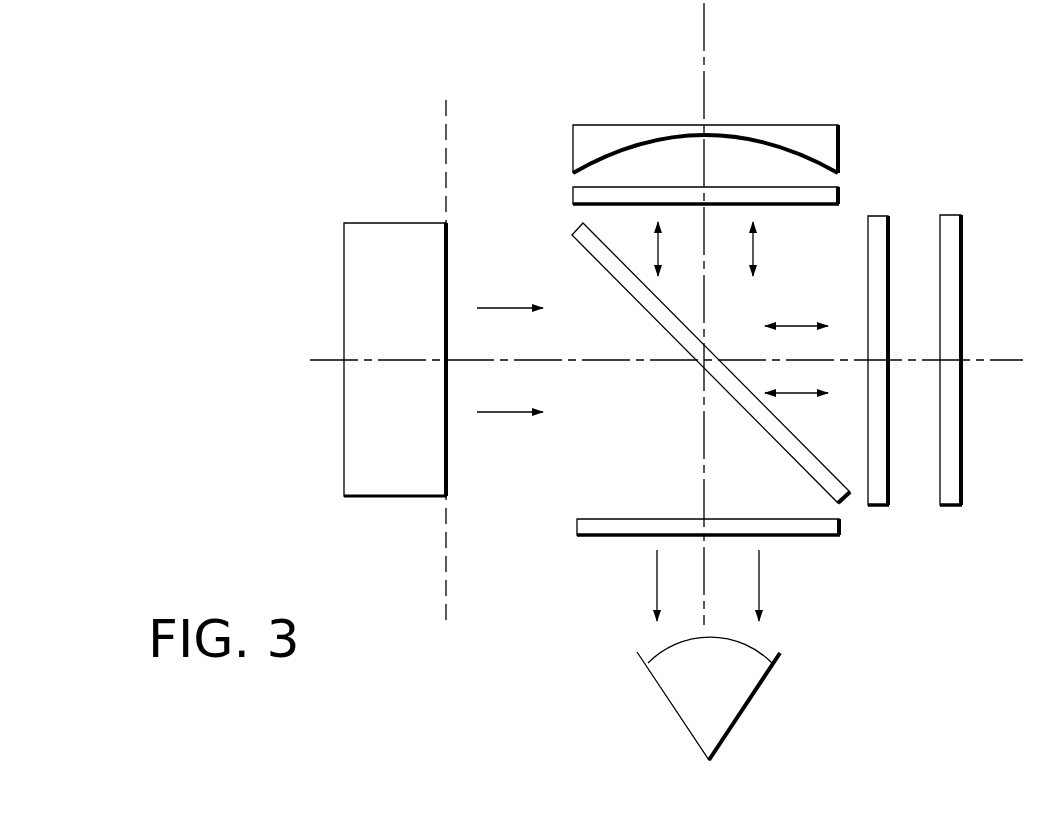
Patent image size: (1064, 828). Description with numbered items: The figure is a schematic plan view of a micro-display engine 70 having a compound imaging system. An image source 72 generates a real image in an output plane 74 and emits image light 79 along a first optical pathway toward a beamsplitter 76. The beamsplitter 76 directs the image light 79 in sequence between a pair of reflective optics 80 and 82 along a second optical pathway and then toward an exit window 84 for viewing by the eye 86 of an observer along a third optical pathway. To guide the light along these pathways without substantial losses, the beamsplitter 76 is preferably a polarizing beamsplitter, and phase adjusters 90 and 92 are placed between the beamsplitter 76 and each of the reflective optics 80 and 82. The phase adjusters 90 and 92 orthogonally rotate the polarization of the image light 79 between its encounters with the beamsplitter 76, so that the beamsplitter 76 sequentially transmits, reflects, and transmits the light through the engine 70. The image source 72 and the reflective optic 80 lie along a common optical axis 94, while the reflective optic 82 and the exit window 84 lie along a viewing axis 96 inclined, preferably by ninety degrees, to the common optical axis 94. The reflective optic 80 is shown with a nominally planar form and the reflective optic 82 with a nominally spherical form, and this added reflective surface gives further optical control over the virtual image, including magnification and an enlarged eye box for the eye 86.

The micro-display engine 70 is at (966, 87).
The image source 72 is at (408, 434).
The output plane 74 is at (446, 157).
The beamsplitter 76 is at (701, 371).
The image light 79 is at (503, 308).
The reflective optic 80 is at (944, 472).
The reflective optic 82 is at (694, 137).
The exit window 84 is at (597, 519).
The eye 86 is at (672, 708).
The phase adjuster 90 is at (888, 305).
The phase adjuster 92 is at (832, 197).
The common optical axis 94 is at (1005, 359).
The viewing axis 96 is at (704, 77).